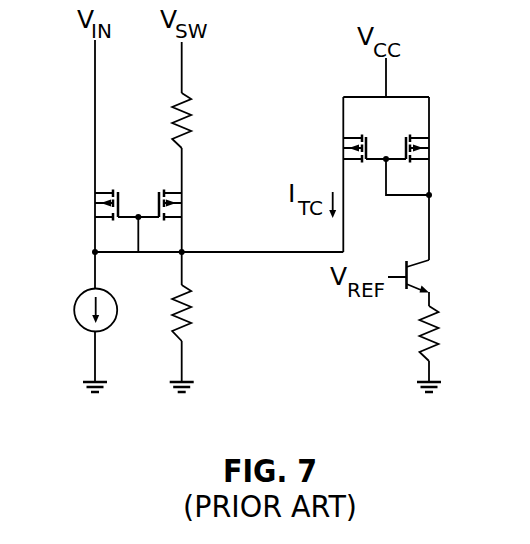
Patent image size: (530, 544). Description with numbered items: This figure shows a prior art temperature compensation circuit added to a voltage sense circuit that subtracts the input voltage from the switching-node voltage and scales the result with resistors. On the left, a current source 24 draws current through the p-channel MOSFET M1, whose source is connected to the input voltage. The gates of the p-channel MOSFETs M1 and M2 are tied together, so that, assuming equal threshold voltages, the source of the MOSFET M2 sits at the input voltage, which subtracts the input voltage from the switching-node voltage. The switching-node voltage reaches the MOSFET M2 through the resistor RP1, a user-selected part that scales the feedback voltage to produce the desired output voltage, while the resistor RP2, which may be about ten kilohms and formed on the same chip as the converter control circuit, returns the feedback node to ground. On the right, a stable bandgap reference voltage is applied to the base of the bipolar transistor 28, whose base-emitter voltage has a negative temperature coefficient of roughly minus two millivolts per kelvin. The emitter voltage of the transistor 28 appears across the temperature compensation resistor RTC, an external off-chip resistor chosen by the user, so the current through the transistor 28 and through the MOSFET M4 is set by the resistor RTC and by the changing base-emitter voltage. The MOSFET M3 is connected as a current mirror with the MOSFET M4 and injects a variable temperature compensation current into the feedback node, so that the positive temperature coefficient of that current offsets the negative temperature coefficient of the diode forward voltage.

The current source 24 is at (74, 309).
The bipolar transistor 28 is at (428, 277).
The p-channel MOSFET M1 is at (87, 205).
The p-channel MOSFET M2 is at (189, 205).
The MOSFET M3 is at (335, 149).
The MOSFET M4 is at (436, 149).
The resistor RP1 is at (204, 121).
The resistor RP2 is at (204, 314).
The temperature compensation resistor RTC is at (453, 334).